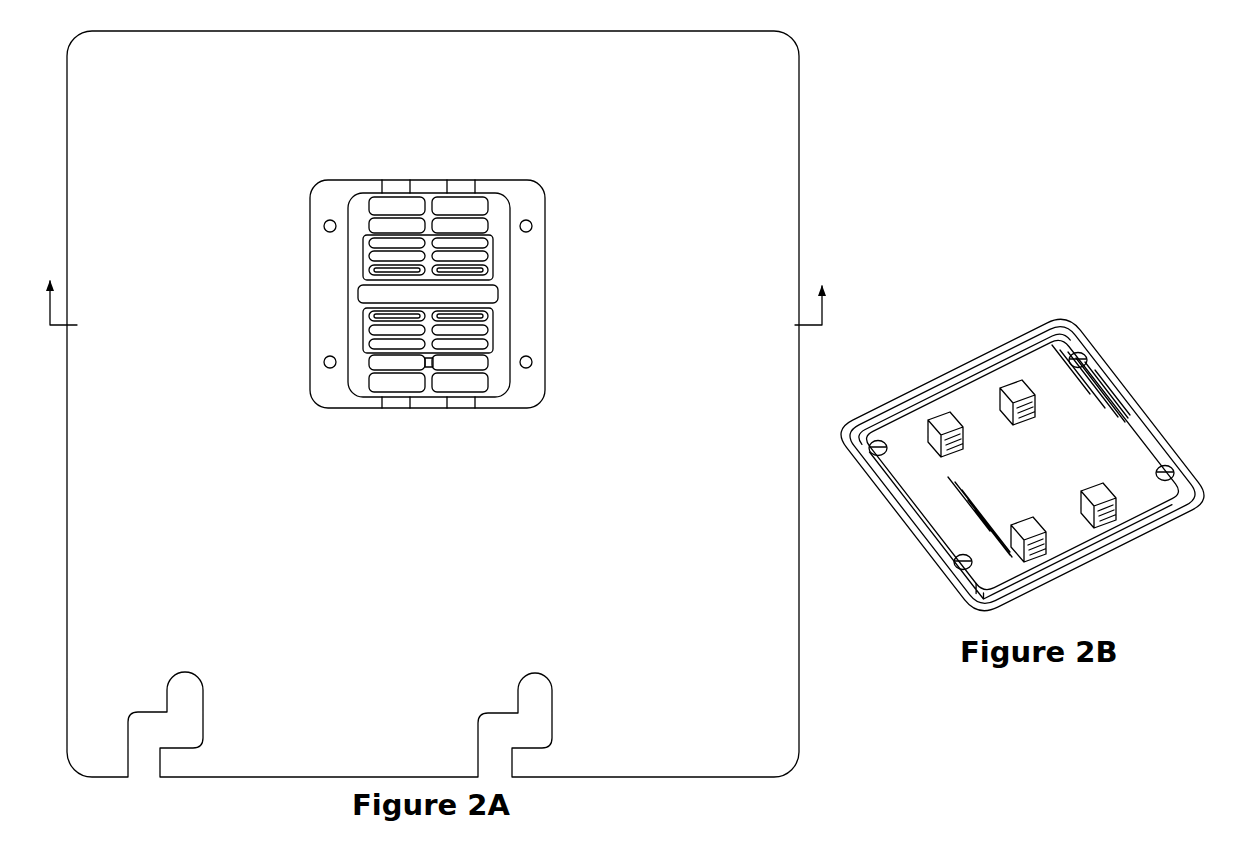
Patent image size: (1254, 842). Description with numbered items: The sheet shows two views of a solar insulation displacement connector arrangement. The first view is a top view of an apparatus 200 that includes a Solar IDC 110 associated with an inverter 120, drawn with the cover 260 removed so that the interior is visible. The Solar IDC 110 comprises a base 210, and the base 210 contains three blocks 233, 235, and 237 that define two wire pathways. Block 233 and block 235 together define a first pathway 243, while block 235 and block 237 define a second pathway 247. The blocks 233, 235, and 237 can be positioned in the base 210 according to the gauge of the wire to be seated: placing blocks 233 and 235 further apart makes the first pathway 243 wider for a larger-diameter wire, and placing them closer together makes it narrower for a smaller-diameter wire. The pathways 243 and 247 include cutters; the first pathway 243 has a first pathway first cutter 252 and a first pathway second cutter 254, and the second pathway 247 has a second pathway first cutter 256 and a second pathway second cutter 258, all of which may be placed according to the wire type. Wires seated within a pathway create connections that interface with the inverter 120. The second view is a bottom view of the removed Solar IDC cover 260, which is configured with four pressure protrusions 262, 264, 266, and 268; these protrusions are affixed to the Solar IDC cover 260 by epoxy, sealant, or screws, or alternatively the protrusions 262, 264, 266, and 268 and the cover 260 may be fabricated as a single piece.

In FIG. 2A, the apparatus 200 is at (806, 109).
In FIG. 2A, the inverter 120 is at (721, 673).
In FIG. 2A, the Solar IDC 110 is at (303, 272).
In FIG. 2A, the base 210 is at (312, 346).
In FIG. 2A, the first pathway first cutter 252 is at (385, 270).
In FIG. 2A, the first pathway second cutter 254 is at (387, 319).
In FIG. 2A, the second pathway first cutter 256 is at (457, 270).
In FIG. 2A, the second pathway second cutter 258 is at (460, 318).
In FIG. 2A, the block 233 is at (368, 360).
In FIG. 2A, the block 235 is at (430, 360).
In FIG. 2A, the block 237 is at (487, 361).
In FIG. 2A, the first pathway 243 is at (397, 386).
In FIG. 2A, the second pathway 247 is at (462, 386).
In FIG. 2B, the Solar IDC cover 260 is at (956, 353).
In FIG. 2B, the pressure protrusion 262 is at (924, 452).
In FIG. 2B, the pressure protrusion 264 is at (1004, 545).
In FIG. 2B, the pressure protrusion 266 is at (1027, 407).
In FIG. 2B, the pressure protrusion 268 is at (1113, 500).